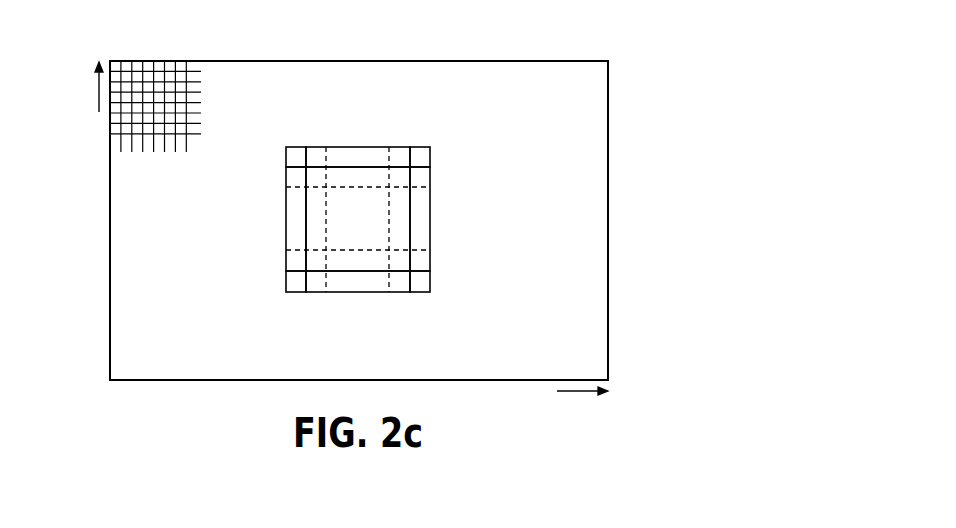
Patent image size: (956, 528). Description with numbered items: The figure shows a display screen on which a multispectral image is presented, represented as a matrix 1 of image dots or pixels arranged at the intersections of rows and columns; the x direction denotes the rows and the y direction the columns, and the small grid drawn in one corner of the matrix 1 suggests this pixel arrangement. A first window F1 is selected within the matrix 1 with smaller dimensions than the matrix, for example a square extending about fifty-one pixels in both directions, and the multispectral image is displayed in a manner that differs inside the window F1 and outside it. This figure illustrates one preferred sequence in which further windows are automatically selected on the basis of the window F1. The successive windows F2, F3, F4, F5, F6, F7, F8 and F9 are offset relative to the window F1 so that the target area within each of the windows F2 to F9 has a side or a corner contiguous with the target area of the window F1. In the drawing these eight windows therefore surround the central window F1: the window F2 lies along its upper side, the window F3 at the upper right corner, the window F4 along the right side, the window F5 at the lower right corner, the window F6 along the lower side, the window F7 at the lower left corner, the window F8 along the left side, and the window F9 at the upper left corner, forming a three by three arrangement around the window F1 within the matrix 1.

The matrix 1 is at (110, 313).
The window F1 is at (372, 229).
The window F2 is at (357, 143).
The window F3 is at (432, 157).
The window F4 is at (432, 258).
The window F5 is at (417, 292).
The window F6 is at (317, 292).
The window F7 is at (285, 282).
The window F8 is at (286, 178).
The window F9 is at (298, 145).